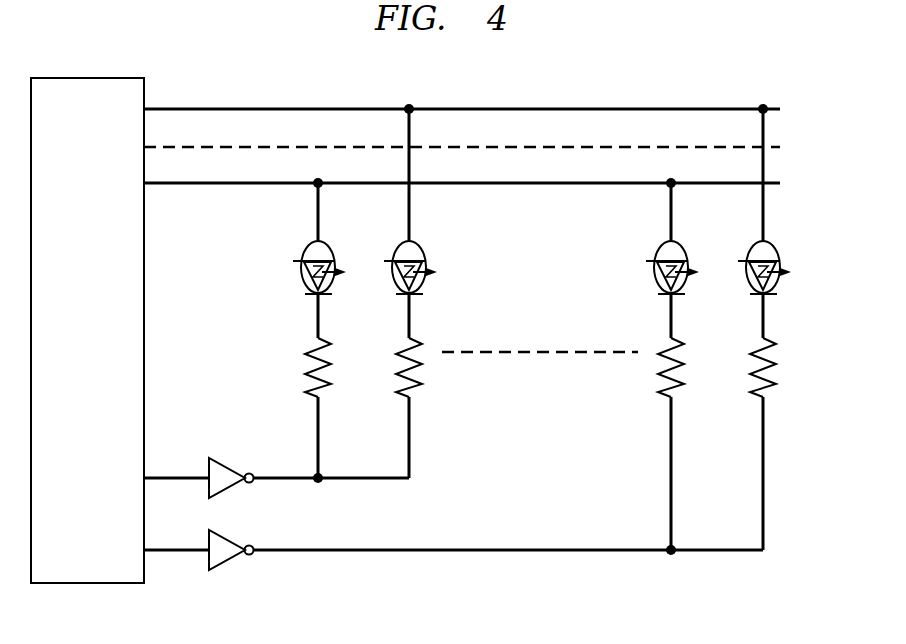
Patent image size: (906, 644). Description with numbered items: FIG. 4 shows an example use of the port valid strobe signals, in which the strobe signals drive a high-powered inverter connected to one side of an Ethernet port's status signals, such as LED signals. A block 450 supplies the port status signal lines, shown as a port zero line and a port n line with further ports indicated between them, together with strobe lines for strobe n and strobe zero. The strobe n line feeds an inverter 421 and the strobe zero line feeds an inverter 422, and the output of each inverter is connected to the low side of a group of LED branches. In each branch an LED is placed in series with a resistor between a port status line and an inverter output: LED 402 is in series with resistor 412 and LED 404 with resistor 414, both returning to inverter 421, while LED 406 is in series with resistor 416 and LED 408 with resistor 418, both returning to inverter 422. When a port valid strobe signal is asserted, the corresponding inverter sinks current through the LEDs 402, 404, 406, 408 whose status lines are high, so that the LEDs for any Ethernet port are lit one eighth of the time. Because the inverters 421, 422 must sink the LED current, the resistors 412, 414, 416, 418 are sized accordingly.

The light emitting diode 402 is at (300, 258).
The light emitting diode 404 is at (430, 258).
The light emitting diode 406 is at (653, 258).
The light emitting diode 408 is at (786, 258).
The resistor 412 is at (305, 362).
The resistor 414 is at (425, 372).
The resistor 416 is at (656, 372).
The resistor 418 is at (780, 365).
The inverter 421 is at (230, 490).
The inverter 422 is at (230, 562).
The controller / port driver 450 is at (88, 583).